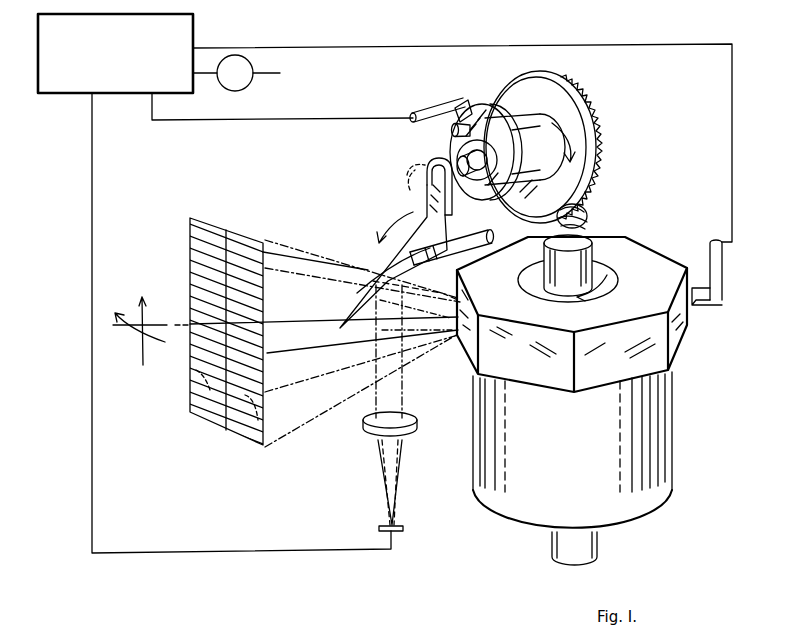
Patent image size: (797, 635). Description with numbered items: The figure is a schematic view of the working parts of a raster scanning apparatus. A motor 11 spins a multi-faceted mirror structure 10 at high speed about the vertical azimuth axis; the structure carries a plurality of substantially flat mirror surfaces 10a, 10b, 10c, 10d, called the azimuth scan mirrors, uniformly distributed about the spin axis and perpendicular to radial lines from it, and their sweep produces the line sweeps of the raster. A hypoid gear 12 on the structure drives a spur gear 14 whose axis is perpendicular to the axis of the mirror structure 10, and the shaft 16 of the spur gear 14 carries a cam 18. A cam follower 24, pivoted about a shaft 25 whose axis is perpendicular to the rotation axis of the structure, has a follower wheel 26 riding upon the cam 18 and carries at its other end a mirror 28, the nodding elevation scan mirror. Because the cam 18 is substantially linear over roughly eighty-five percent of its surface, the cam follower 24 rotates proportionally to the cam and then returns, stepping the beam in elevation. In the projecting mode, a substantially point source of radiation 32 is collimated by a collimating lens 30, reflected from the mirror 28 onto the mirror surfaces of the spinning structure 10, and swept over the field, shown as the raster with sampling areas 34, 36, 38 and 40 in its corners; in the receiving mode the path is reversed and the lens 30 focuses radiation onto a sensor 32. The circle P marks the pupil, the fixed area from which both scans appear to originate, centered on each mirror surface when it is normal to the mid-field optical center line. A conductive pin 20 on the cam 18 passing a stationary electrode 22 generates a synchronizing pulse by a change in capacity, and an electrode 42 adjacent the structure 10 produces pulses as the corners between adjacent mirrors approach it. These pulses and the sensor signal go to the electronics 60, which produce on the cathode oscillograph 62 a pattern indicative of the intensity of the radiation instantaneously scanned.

The mirror structure 10 is at (550, 321).
The mirror surface 10a is at (684, 332).
The mirror surface 10b is at (598, 378).
The mirror surface 10c is at (525, 375).
The mirror surface 10d is at (463, 335).
The motor 11 is at (533, 518).
The hypoid gear 12 is at (588, 214).
The spur gear 14 is at (588, 115).
The shaft 16 is at (527, 128).
The cam 18 is at (477, 107).
The conductive pin 20 is at (450, 130).
The stationary electrode 22 is at (447, 103).
The cam follower 24 is at (430, 203).
The shaft 25 is at (495, 207).
The follower wheel 26 is at (437, 160).
The mirror 28 is at (338, 323).
The collimating lens 30 is at (408, 430).
The source of light or radiation 32 is at (400, 530).
The sampling area 34 is at (224, 324).
The sampling area 36 is at (253, 232).
The sampling area 38 is at (203, 390).
The sampling area 40 is at (252, 432).
The electrode 42 is at (724, 296).
The electronics 60 is at (190, 32).
The cathode oscillograph 62 is at (248, 73).
The pupil P is at (466, 308).